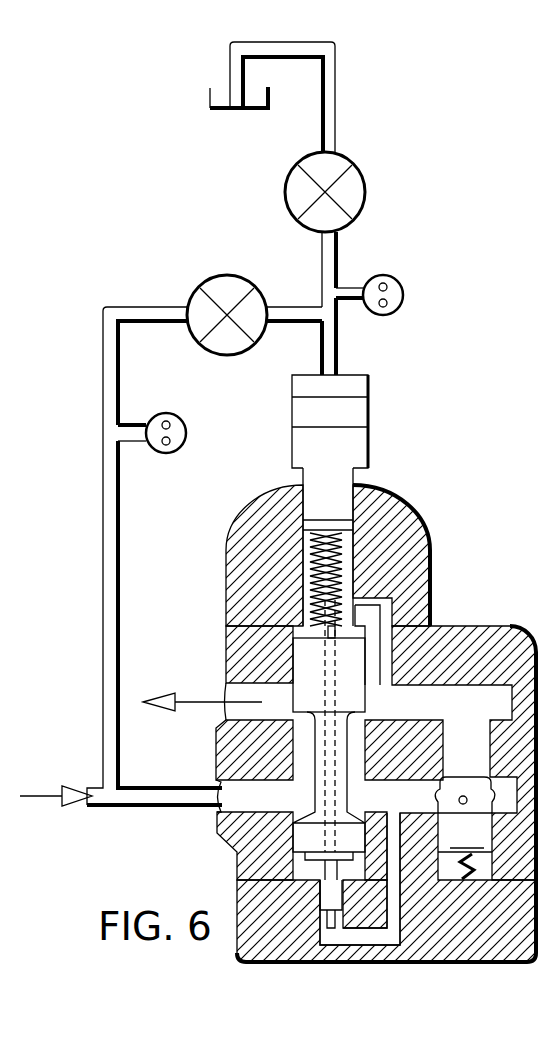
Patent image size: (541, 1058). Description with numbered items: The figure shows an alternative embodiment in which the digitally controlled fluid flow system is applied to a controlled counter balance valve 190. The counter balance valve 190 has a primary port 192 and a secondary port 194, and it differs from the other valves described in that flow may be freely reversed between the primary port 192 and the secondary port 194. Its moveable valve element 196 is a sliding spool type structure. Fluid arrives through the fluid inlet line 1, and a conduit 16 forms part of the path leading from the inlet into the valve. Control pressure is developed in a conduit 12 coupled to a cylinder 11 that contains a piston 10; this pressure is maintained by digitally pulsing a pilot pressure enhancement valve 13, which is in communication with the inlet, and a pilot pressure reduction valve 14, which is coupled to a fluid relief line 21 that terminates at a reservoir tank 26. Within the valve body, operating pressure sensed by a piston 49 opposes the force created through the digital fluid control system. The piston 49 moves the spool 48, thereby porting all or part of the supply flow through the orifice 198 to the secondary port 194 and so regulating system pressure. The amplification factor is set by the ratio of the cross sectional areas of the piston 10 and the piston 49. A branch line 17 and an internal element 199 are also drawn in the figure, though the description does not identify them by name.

The fluid inlet line 1 is at (133, 810).
The piston 10 is at (356, 405).
The cylinder 11 is at (363, 443).
The conduit 12 is at (340, 353).
The pilot pressure enhancement valve 13 is at (254, 277).
The pilot pressure reduction valve 14 is at (354, 161).
The conduit 16 is at (1, 235).
The conduit 17 is at (121, 394).
The fluid relief line 21 is at (338, 95).
The reservoir tank 26 is at (211, 89).
The spool 48 is at (310, 682).
The piston 49 is at (320, 893).
The counter balance valve 190 is at (335, 701).
The primary port 192 is at (223, 793).
The secondary port 194 is at (233, 713).
The moveable valve element 196 is at (300, 757).
The orifice 198 is at (367, 713).
The check valve 199 is at (465, 828).